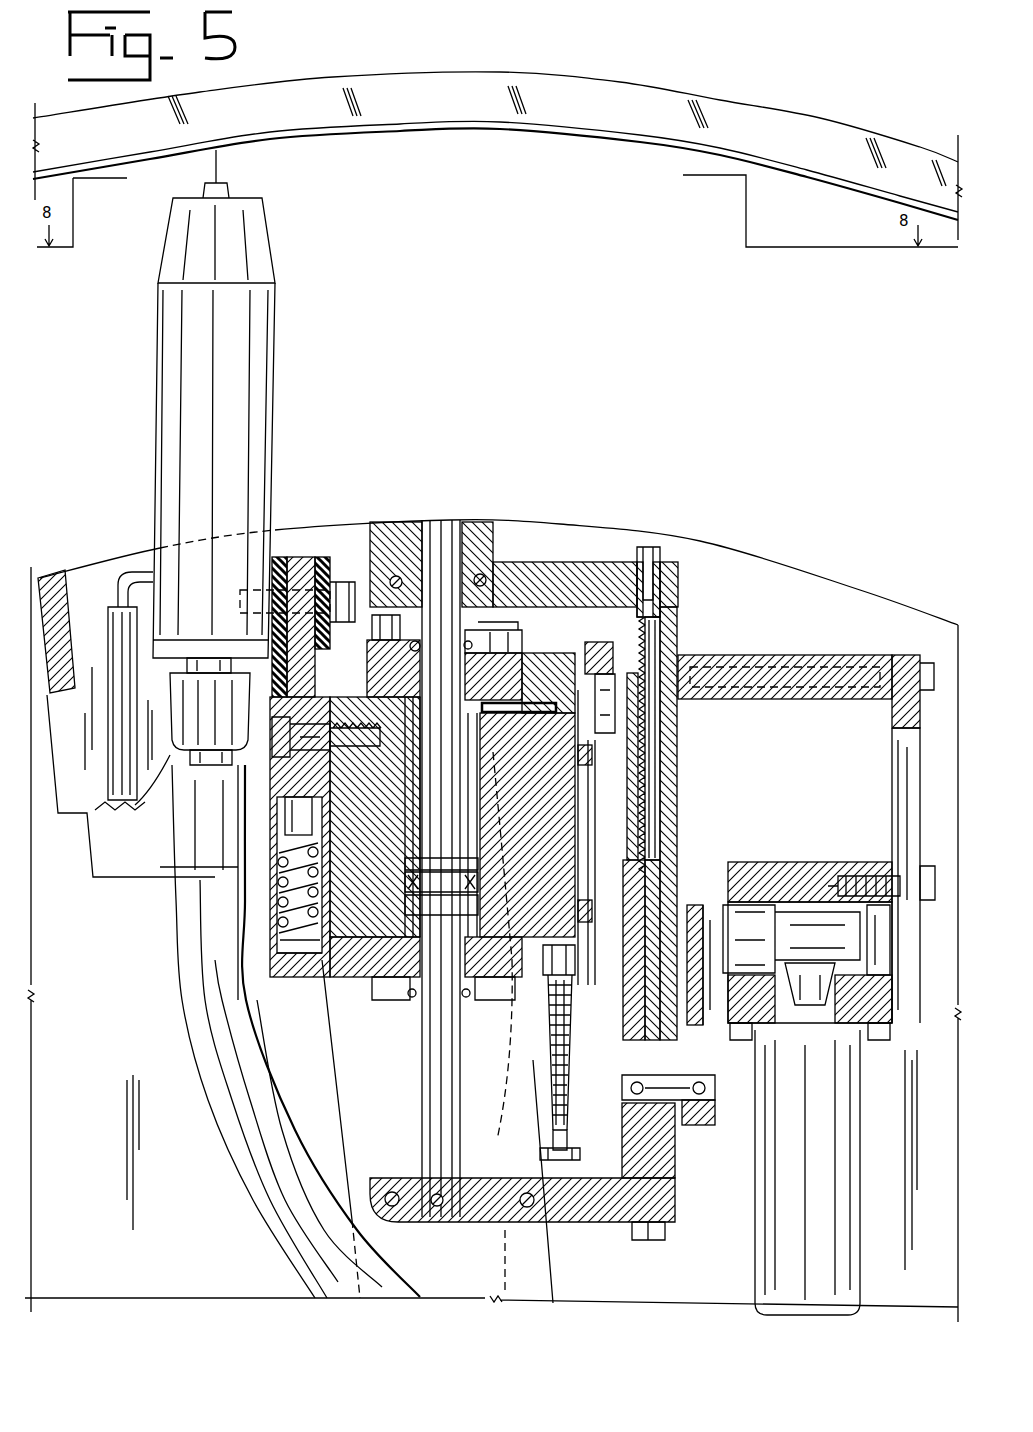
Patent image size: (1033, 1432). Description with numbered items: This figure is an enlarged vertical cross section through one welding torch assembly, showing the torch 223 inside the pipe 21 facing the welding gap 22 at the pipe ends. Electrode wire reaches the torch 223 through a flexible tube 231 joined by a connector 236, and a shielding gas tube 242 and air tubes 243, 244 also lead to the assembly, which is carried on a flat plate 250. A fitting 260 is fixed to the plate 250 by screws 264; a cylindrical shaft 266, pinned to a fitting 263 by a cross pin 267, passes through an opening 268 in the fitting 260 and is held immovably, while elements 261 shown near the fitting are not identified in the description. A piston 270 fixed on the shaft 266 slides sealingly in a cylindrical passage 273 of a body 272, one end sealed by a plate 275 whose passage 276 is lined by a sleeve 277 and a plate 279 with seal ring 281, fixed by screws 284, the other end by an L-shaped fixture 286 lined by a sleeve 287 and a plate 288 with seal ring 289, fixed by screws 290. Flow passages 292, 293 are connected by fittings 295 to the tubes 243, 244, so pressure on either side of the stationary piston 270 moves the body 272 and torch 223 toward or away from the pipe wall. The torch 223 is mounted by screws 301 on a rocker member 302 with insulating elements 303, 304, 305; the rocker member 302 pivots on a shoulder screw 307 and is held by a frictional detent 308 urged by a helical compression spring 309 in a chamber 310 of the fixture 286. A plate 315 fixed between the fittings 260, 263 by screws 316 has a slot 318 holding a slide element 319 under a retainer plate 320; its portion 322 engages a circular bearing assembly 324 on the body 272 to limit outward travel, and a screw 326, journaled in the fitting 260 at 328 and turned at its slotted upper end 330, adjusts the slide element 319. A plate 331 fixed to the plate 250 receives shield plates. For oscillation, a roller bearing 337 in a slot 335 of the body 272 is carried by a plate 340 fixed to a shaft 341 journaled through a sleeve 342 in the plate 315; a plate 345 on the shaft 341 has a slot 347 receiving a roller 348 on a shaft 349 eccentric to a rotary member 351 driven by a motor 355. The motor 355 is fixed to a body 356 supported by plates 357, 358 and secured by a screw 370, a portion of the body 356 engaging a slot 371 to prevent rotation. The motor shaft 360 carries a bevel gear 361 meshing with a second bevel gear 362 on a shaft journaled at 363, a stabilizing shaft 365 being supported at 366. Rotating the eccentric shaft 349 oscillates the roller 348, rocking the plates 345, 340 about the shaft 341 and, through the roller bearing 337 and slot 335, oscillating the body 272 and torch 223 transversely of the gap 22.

The pipe 21 is at (552, 82).
The welding gap 22 is at (386, 100).
The welding torch 223 is at (276, 356).
The flexible tube 231 is at (205, 1087).
The connector 236 is at (146, 800).
The shielding gas tube 242 is at (108, 622).
The air tube 243 is at (570, 1120).
The air tube 244 is at (578, 1155).
The flat plate 250 is at (340, 1092).
The fitting 260 is at (516, 560).
The cover screw 261 is at (398, 574).
The fitting 263 is at (562, 1224).
The screws 264 is at (394, 1208).
The cylindrical shaft 266 is at (420, 1141).
The cross pin 267 is at (437, 1208).
The opening 268 is at (470, 540).
The piston 270 is at (336, 982).
The body 272 is at (345, 837).
The cylindrical passage 273 is at (328, 952).
The plate 275 is at (522, 700).
The cylindrical passage 276 is at (433, 580).
The sleeve 277 is at (456, 580).
The plate 279 is at (372, 655).
The seal ring 281 is at (377, 669).
The screws 284 is at (385, 530).
The fixture 286 is at (357, 1025).
The sleeve 287 is at (392, 1060).
The plate 288 is at (483, 1045).
The seal ring 289 is at (382, 1058).
The screws 290 is at (489, 1022).
The flow passage 292 is at (548, 700).
The flow passage 293 is at (437, 1027).
The fittings 295 is at (574, 1000).
The screws 301 is at (346, 582).
The rocker member 302 is at (288, 822).
The insulating element 303 is at (280, 556).
The insulating element 304 is at (308, 548).
The insulating element 305 is at (326, 556).
The shoulder screw 307 is at (258, 731).
The frictional detent 308 is at (288, 862).
The helical compression spring 309 is at (300, 882).
The chamber 310 is at (300, 906).
The plate 315 is at (678, 630).
The screws 316 is at (649, 1242).
The slot 318 is at (680, 797).
The slide element 319 is at (678, 728).
The retainer plate 320 is at (690, 862).
The portion 322 is at (600, 648).
The circular bearing assembly 324 is at (598, 827).
The screw 326 is at (667, 660).
The journal 328 is at (680, 577).
The slotted upper end 330 is at (662, 548).
The plate 331 is at (68, 576).
The slot 335 is at (702, 822).
The roller bearing 337 is at (577, 975).
The plate 340 is at (625, 956).
The shaft 341 is at (620, 1090).
The sleeve 342 is at (676, 1180).
The plate 345 is at (700, 1125).
The slot 347 is at (703, 790).
The roller 348 is at (838, 862).
The shaft 349 is at (762, 866).
The rotary member 351 is at (714, 1000).
The motor 355 is at (866, 1190).
The body 356 is at (832, 860).
The plate 357 is at (826, 655).
The plate 358 is at (892, 720).
The motor shaft 360 is at (816, 1005).
The bevel gear 361 is at (838, 1005).
The second bevel gear 362 is at (778, 1025).
The journal 363 is at (770, 1025).
The stabilizing shaft 365 is at (846, 1000).
The rotatable support 366 is at (852, 1020).
The screw 370 is at (870, 872).
The slot 371 is at (893, 765).